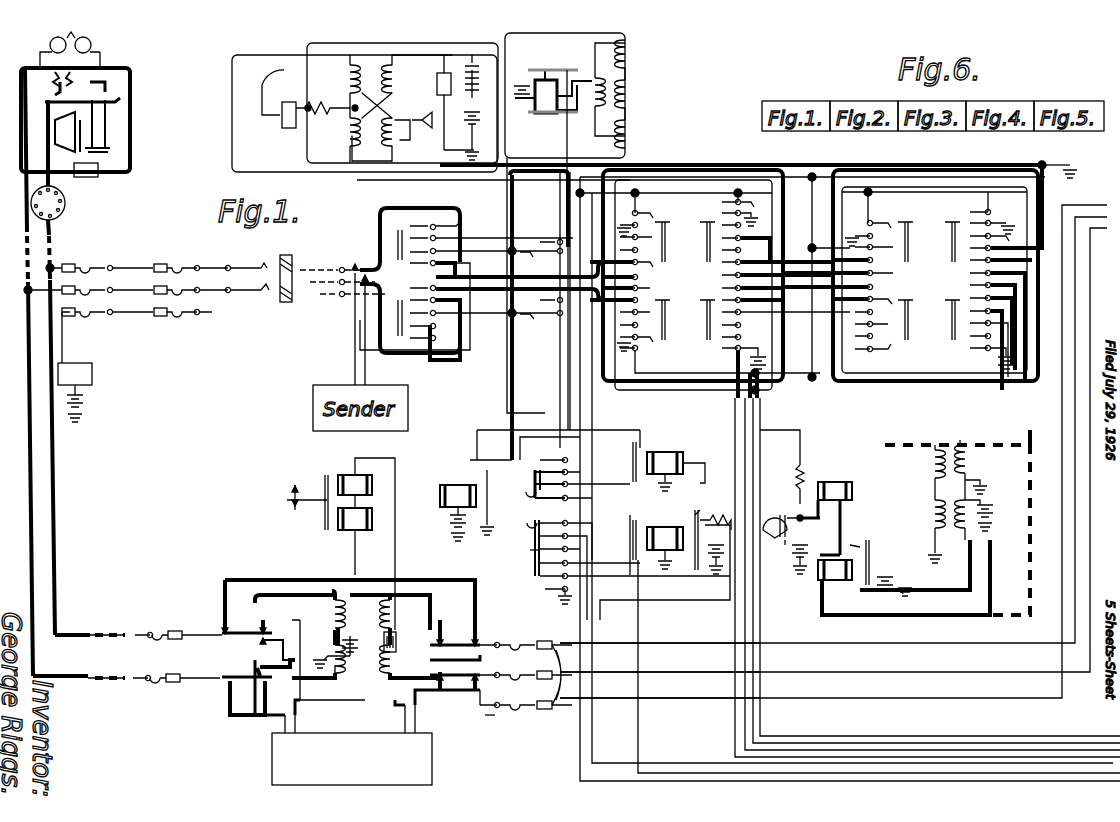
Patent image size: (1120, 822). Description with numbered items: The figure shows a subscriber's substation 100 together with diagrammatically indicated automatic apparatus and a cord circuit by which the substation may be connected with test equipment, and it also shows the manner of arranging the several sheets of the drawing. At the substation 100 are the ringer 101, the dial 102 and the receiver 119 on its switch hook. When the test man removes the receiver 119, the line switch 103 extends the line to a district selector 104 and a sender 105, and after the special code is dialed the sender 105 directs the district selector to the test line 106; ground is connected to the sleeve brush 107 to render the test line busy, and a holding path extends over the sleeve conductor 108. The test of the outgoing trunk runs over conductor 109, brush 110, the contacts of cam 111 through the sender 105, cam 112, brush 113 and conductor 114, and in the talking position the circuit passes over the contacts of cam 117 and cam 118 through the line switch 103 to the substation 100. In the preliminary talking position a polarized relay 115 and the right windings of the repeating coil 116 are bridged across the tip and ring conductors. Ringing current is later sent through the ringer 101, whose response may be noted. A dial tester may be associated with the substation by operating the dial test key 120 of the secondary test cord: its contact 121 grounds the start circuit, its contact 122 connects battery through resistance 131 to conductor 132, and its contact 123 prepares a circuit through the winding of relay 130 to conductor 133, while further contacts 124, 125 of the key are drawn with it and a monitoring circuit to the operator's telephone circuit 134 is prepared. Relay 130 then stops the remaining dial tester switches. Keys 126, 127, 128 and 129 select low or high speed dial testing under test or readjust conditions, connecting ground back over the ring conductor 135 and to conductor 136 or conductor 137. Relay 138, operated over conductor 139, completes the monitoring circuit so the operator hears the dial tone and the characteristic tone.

The subscriber's substation 100 is at (122, 141).
The ringer 101 is at (99, 50).
The dial 102 is at (66, 207).
The line switch 103 is at (149, 473).
The district selector 104 is at (516, 633).
The sender 105 is at (432, 755).
The test line 106 is at (551, 660).
The sleeve brush 107 is at (501, 718).
The sleeve conductor 108 is at (874, 698).
The conductor 109 is at (688, 636).
The brush 110 is at (516, 664).
The cam 111 is at (460, 650).
The cam 112 is at (455, 679).
The brush 113 is at (516, 694).
The conductor 114 is at (803, 680).
The polarized relay 115 is at (345, 478).
The repeating coil 116 is at (345, 595).
The cam 117 is at (248, 625).
The cam 118 is at (248, 668).
The receiver 119 is at (116, 114).
The dial test key 120 is at (538, 518).
The contact 121 is at (530, 582).
The contact 122 is at (532, 540).
The contact 123 is at (530, 562).
The relay contact 124 is at (526, 488).
The relay contact 125 is at (536, 460).
The key 126 is at (885, 281).
The key 127 is at (972, 281).
The key 128 is at (645, 281).
The key 129 is at (740, 281).
The relay 130 is at (660, 530).
The resistance 131 is at (723, 520).
The conductor 132 is at (595, 745).
The conductor 133 is at (995, 773).
The operator's telephone circuit 134 is at (365, 107).
The ring conductor 135 is at (820, 735).
The conductor 136 is at (948, 740).
The conductor 137 is at (737, 725).
The relay 138 is at (688, 460).
The conductor 139 is at (730, 663).